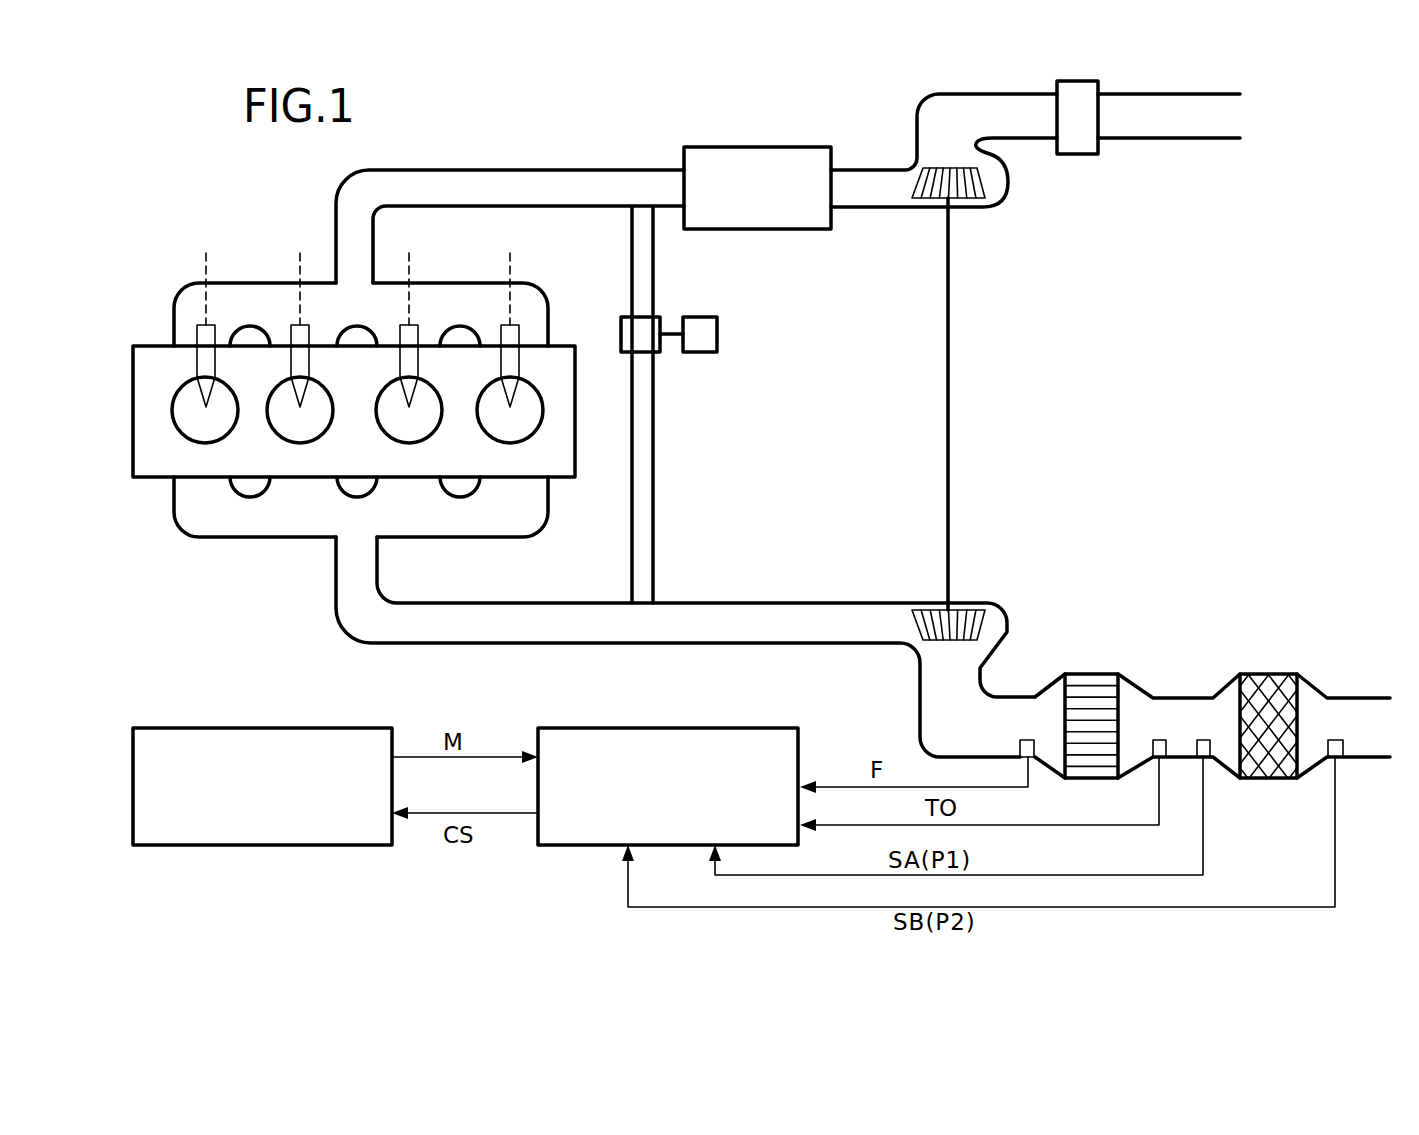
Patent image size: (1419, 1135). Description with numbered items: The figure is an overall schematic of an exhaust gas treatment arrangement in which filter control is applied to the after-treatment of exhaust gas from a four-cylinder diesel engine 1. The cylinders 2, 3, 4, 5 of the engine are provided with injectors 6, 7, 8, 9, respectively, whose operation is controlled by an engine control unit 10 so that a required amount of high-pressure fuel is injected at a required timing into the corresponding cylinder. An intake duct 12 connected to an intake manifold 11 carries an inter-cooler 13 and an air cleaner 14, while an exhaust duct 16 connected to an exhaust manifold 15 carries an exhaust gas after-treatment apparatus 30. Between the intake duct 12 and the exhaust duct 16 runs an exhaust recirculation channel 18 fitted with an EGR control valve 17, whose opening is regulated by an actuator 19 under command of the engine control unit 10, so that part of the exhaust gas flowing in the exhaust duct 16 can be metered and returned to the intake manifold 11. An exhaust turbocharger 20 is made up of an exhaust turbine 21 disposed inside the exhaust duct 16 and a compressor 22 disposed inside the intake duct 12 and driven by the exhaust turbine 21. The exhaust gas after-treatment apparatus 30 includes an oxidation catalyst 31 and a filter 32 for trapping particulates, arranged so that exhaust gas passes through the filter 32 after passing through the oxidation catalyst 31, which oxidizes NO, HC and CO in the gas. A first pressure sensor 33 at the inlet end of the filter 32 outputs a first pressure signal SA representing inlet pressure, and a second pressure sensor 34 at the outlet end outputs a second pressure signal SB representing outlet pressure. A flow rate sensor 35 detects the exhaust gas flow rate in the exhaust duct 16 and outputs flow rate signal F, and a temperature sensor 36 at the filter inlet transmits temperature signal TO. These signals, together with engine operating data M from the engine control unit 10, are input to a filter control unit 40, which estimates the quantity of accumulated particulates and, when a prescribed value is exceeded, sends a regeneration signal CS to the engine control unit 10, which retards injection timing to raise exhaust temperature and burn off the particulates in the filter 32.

The four-cylinder diesel engine 1 is at (133, 398).
The cylinder 2 is at (190, 446).
The cylinder 3 is at (284, 446).
The cylinder 4 is at (390, 444).
The cylinder 5 is at (491, 444).
The injector 6 is at (205, 348).
The injector 7 is at (301, 345).
The injector 8 is at (401, 343).
The injector 9 is at (515, 338).
The engine control unit 10 is at (233, 738).
The intake manifold 11 is at (193, 297).
The intake duct 12 is at (531, 192).
The inter-cooler 13 is at (735, 160).
The air cleaner 14 is at (1080, 137).
The exhaust manifold 15 is at (266, 518).
The exhaust duct 16 is at (714, 620).
The EGR control valve 17 is at (642, 328).
The exhaust recirculation channel 18 is at (646, 456).
The actuator 19 is at (704, 332).
The exhaust turbocharger 20 is at (958, 302).
The exhaust turbine 21 is at (991, 618).
The compressor 22 is at (1010, 190).
The exhaust gas after-treatment apparatus 30 is at (1135, 666).
The oxidation catalyst 31 is at (1093, 702).
The filter 32 is at (1271, 688).
The first pressure sensor 33 is at (1210, 750).
The second pressure sensor 34 is at (1343, 750).
The flow rate sensor 35 is at (1024, 736).
The temperature sensor 36 is at (1154, 760).
The filter control unit 40 is at (652, 746).